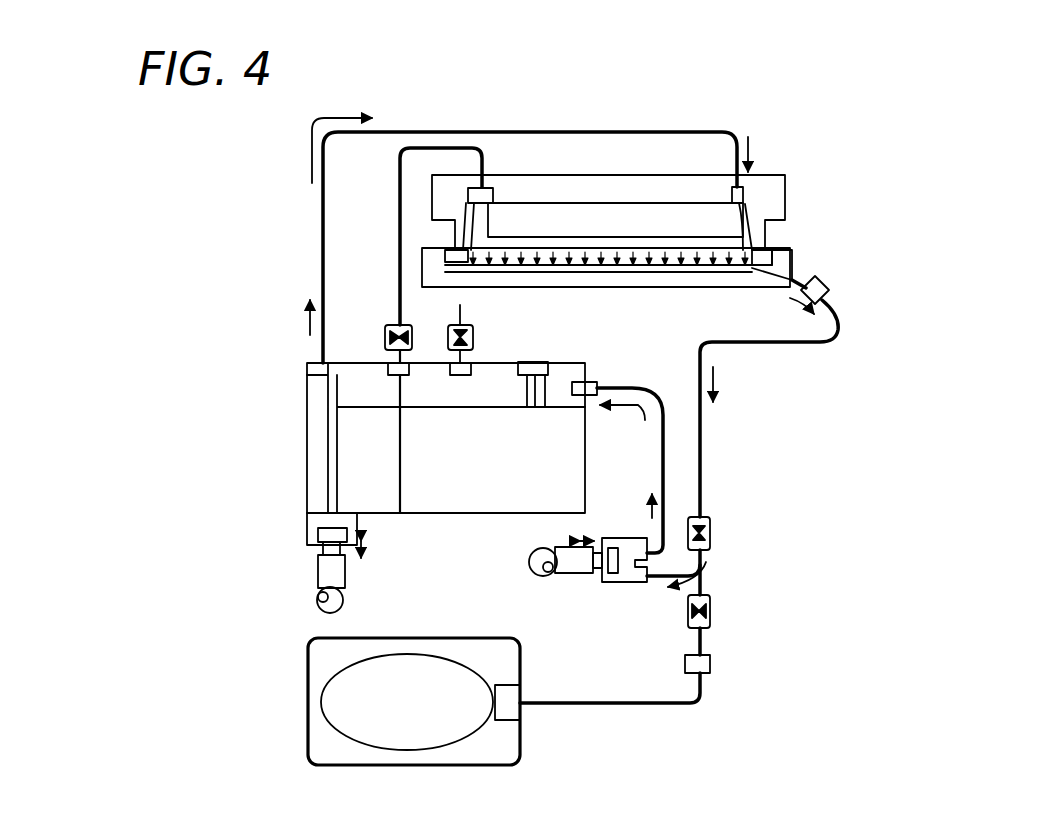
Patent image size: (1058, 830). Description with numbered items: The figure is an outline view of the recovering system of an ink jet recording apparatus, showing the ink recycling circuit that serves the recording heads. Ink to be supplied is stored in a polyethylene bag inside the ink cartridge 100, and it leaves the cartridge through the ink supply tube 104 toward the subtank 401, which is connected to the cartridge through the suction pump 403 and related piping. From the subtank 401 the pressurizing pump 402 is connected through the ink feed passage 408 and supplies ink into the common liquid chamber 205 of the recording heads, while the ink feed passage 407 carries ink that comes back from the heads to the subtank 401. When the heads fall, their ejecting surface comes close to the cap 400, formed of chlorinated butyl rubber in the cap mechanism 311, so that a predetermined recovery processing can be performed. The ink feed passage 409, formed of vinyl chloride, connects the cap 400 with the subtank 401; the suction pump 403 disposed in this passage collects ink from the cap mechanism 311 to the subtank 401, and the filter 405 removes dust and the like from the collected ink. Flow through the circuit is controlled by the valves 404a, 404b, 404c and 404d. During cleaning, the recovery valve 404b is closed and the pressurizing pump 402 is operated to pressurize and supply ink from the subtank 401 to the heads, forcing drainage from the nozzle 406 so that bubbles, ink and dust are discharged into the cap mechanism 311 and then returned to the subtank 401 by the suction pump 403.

The ink cartridge 100 is at (315, 738).
The ink supply tube 104 is at (617, 704).
The common liquid chamber 205 is at (572, 237).
The cap mechanism 311 is at (790, 255).
The cap 400 is at (452, 253).
The subtank 401 is at (480, 515).
The pressurizing pump 402 is at (318, 535).
The suction pump 403 is at (625, 583).
The valve 404a is at (712, 608).
The recovery valve 404b is at (388, 333).
The valve 404c is at (470, 327).
The valve 404d is at (712, 530).
The filter 405 is at (487, 188).
The nozzle 406 is at (642, 273).
The ink feed passage 407 is at (400, 294).
The ink feed passage 408 is at (322, 228).
The ink feed passage 409 is at (787, 345).